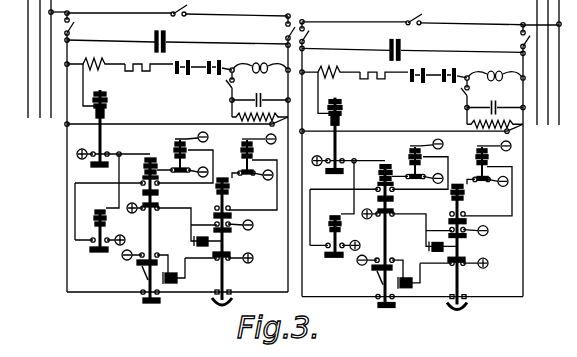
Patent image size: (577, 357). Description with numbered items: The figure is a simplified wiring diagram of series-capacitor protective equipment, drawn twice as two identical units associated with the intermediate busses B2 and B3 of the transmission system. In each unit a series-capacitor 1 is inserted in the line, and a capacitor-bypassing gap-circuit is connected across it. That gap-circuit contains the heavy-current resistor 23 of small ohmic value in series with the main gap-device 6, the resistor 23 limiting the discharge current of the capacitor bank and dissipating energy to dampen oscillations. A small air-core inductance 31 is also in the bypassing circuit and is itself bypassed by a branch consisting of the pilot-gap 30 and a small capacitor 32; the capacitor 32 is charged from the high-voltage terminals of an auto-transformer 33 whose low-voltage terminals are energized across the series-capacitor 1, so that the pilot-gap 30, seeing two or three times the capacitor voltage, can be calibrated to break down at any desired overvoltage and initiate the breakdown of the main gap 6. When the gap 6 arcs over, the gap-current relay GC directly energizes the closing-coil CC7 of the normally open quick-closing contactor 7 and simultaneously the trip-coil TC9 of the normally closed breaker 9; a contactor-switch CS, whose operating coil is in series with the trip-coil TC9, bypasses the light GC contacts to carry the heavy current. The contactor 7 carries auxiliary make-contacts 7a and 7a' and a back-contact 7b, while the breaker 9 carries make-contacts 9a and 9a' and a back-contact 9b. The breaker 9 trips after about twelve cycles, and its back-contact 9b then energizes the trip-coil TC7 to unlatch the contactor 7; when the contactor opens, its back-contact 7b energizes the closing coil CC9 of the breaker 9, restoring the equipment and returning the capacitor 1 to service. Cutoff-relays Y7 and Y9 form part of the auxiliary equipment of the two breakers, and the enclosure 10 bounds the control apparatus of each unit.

The series-capacitor 1 is at (157, 36).
The heavy-current resistor 23 is at (133, 72).
The gap-device 6 is at (192, 82).
The pilot-gap 30 is at (227, 82).
The air-core inductance 31 is at (267, 62).
The small capacitor 32 is at (260, 92).
The auto-transformer 33 is at (231, 118).
The casing 10 is at (98, 282).
The gap-current relay GC is at (108, 115).
The contactor-switch CS is at (98, 223).
The circuit-breaker 7 is at (140, 296).
The closing-coil CC7 is at (144, 160).
The make-contact 7a is at (163, 193).
The back-contact 7b is at (158, 210).
The make-contact 7a' is at (138, 269).
The trip-coil TC7 is at (186, 278).
The trip-coil TC9 is at (192, 240).
The circuit-breaker 9 is at (234, 300).
The closing coil CC9 is at (226, 178).
The make-contact 9a is at (233, 208).
The make-contact 9a' is at (243, 233).
The back-contact 9b is at (230, 258).
The cutoff-relay Y7 is at (184, 149).
The cutoff-relay Y9 is at (251, 150).
The bus B2 is at (158, 158).
The bus B3 is at (426, 164).